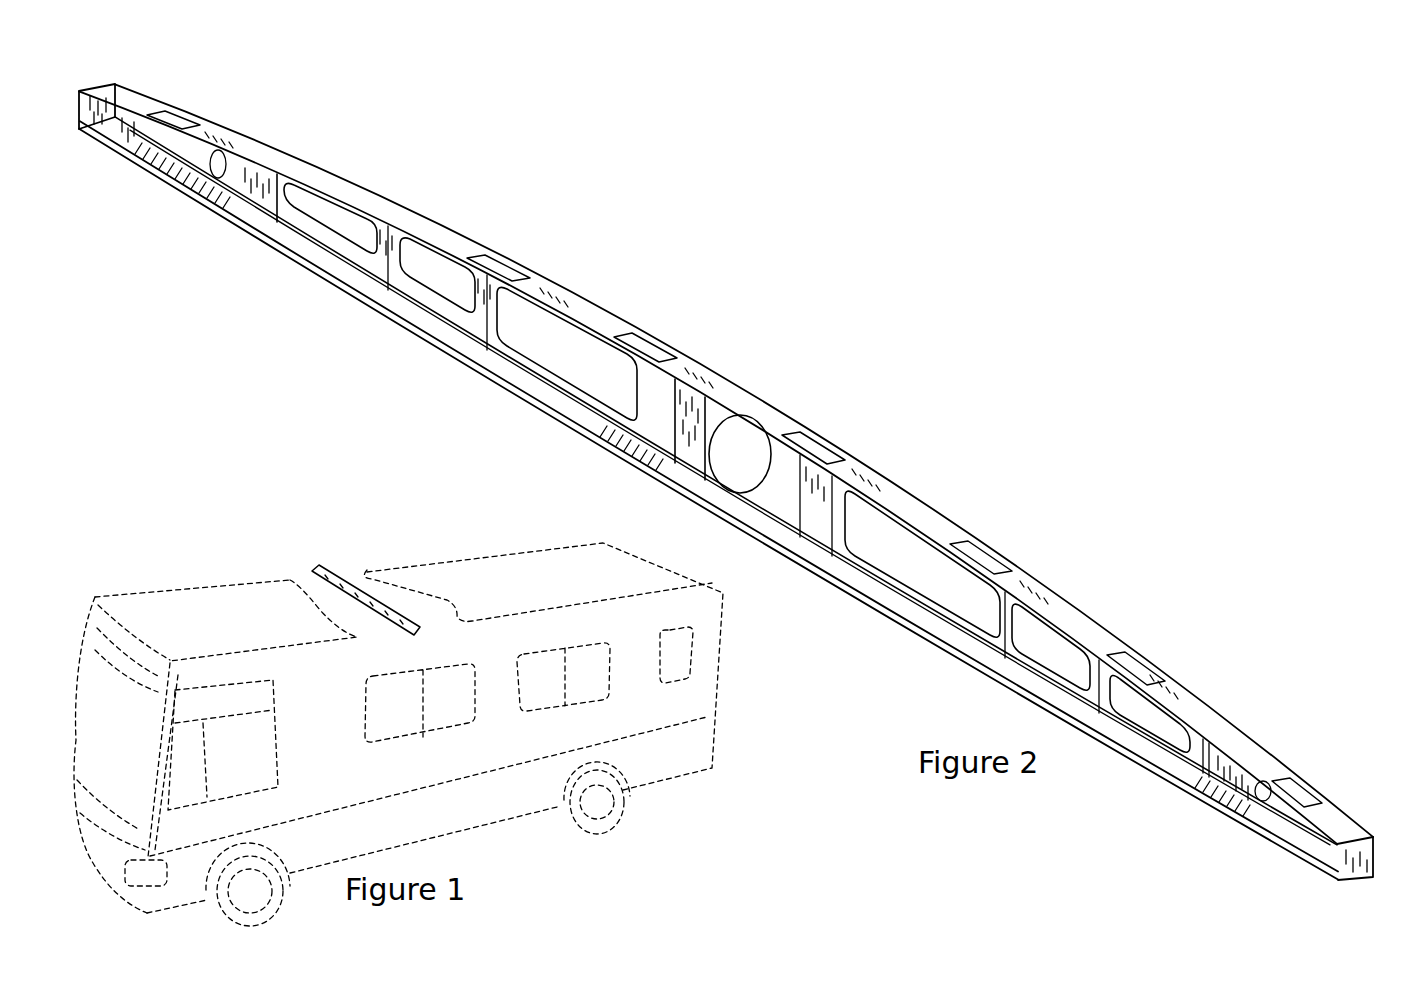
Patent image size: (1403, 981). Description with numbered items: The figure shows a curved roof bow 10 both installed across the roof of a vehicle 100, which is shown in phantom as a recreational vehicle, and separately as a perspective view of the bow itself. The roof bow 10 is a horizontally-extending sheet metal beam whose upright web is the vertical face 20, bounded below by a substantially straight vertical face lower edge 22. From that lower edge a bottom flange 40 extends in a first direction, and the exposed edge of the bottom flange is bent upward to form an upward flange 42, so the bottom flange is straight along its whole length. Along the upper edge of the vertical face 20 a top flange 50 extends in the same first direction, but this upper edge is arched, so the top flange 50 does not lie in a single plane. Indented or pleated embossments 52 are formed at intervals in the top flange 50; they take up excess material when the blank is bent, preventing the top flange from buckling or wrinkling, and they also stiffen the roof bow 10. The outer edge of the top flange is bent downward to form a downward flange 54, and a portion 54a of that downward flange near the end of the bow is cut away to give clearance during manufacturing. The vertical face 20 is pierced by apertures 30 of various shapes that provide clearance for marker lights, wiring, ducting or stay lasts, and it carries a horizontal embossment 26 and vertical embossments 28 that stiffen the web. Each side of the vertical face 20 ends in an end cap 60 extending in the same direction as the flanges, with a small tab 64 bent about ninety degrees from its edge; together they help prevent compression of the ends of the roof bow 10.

In FIG. 2, the curved roof bow 10 is at (726, 507).
In FIG. 1, the curved roof bow 10 is at (306, 567).
In FIG. 2, the vertical face 20 is at (655, 428).
In FIG. 2, the vertical face lower edge 22 is at (540, 378).
In FIG. 2, the horizontal embossment 26 is at (690, 466).
In FIG. 2, the vertical embossments 28 is at (277, 197).
In FIG. 2, the apertures 30 is at (747, 472).
In FIG. 2, the bottom flange 40 is at (392, 300).
In FIG. 2, the upward flange 42 is at (924, 636).
In FIG. 2, the top flange 50 is at (535, 286).
In FIG. 2, the indented embossments 52 is at (182, 112).
In FIG. 2, the downward flange 54 is at (1010, 600).
In FIG. 2, the cut-away portion of downward flange 54a is at (1198, 775).
In FIG. 2, the end cap 60 is at (1360, 872).
In FIG. 2, the small tab 64 is at (1343, 842).
In FIG. 1, the vehicle 100 is at (166, 578).